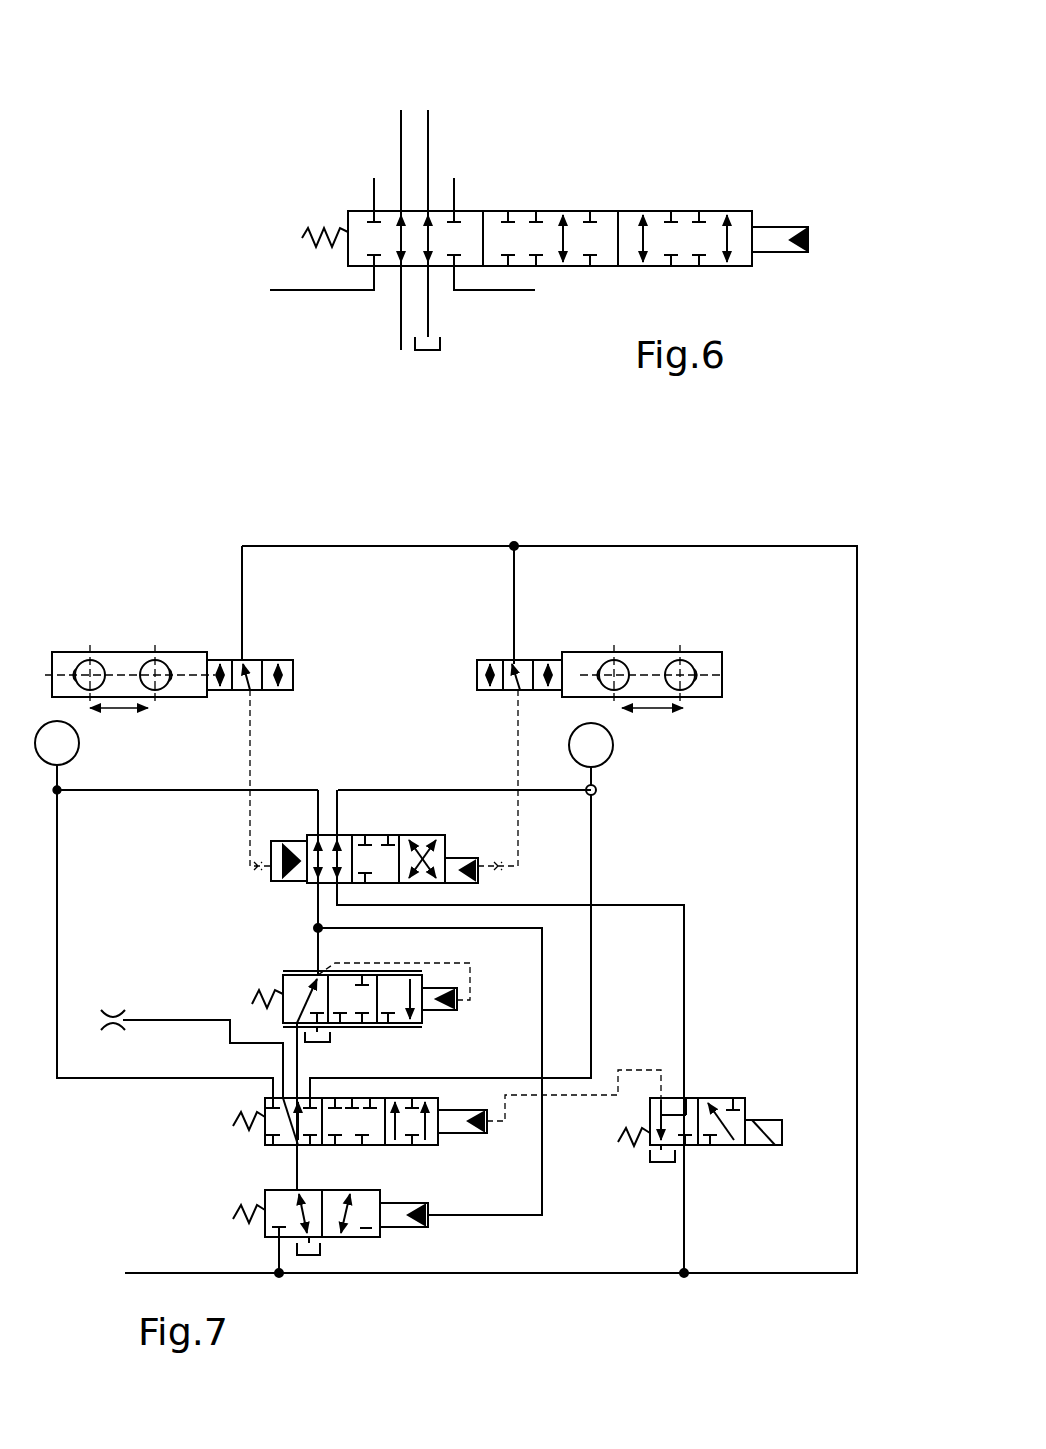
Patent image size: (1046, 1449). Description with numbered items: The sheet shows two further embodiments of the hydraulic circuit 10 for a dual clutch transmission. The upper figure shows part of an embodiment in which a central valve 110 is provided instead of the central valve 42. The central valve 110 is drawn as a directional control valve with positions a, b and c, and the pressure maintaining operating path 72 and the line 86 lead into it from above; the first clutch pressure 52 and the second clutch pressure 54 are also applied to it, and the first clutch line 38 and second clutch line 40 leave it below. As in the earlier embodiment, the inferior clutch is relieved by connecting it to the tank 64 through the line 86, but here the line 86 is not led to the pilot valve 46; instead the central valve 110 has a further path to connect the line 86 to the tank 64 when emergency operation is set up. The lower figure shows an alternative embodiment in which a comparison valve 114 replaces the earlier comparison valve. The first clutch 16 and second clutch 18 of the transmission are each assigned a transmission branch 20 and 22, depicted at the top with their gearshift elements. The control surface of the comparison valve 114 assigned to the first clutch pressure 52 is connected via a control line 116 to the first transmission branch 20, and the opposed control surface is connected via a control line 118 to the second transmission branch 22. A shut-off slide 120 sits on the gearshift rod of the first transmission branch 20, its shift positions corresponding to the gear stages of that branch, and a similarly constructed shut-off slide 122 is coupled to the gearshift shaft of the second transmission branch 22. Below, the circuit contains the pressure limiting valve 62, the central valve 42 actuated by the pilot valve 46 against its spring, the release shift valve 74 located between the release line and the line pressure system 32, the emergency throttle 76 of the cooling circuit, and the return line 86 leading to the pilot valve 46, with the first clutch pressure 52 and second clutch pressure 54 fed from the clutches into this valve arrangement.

In FIG. 6, the hydraulic circuit 10 is at (692, 118).
In FIG. 7, the hydraulic circuit 10 is at (785, 528).
In FIG. 6, the central valve 110 is at (718, 208).
In FIG. 6, the pressure maintaining operating path 72 is at (400, 137).
In FIG. 6, the return line 86 is at (429, 123).
In FIG. 7, the return line 86 is at (686, 972).
In FIG. 6, the second clutch pressure 54 is at (455, 190).
In FIG. 7, the second clutch pressure 54 is at (592, 868).
In FIG. 6, the first clutch pressure 52 is at (374, 193).
In FIG. 7, the first clutch pressure 52 is at (57, 905).
In FIG. 6, the first clutch line 38 is at (315, 290).
In FIG. 6, the second clutch line 40 is at (510, 290).
In FIG. 6, the tank 64 is at (425, 355).
In FIG. 7, the line pressure 32 is at (405, 543).
In FIG. 7, the first transmission branch 20 is at (178, 618).
In FIG. 7, the second transmission branch 22 is at (748, 655).
In FIG. 7, the shut-off slide 120 is at (220, 648).
In FIG. 7, the shut-off slide 122 is at (556, 648).
In FIG. 7, the first clutch 16 is at (57, 757).
In FIG. 7, the second clutch 18 is at (591, 759).
In FIG. 7, the comparison valve 114 is at (404, 828).
In FIG. 7, the control line 116 is at (253, 750).
In FIG. 7, the control line 118 is at (517, 750).
In FIG. 7, the pressure limiting valve 62 is at (278, 975).
In FIG. 7, the emergency throttle 76 is at (113, 1035).
In FIG. 7, the central valve 42 is at (440, 1152).
In FIG. 7, the release shift valve 74 is at (346, 1243).
In FIG. 7, the pilot valve 46 is at (725, 1097).